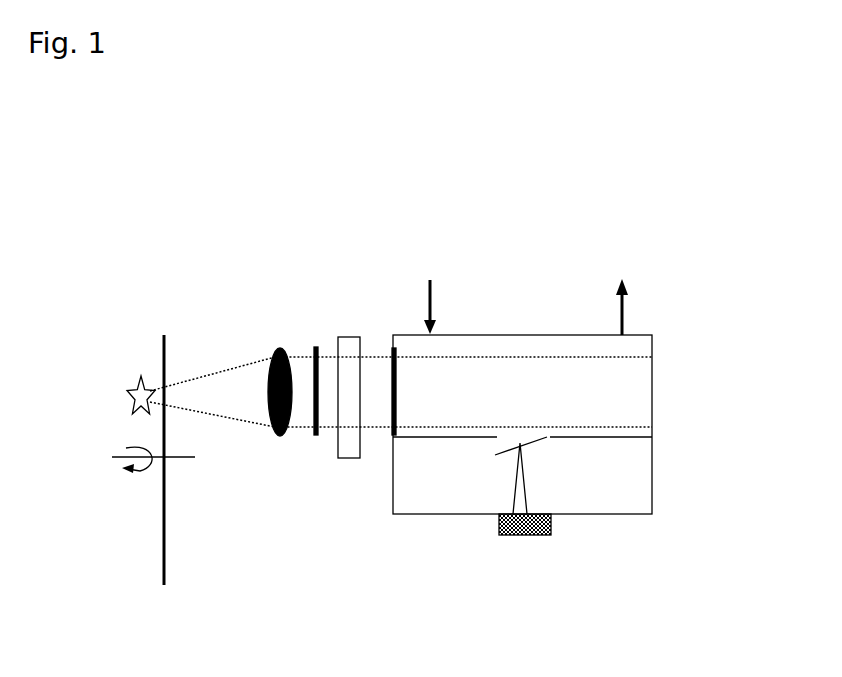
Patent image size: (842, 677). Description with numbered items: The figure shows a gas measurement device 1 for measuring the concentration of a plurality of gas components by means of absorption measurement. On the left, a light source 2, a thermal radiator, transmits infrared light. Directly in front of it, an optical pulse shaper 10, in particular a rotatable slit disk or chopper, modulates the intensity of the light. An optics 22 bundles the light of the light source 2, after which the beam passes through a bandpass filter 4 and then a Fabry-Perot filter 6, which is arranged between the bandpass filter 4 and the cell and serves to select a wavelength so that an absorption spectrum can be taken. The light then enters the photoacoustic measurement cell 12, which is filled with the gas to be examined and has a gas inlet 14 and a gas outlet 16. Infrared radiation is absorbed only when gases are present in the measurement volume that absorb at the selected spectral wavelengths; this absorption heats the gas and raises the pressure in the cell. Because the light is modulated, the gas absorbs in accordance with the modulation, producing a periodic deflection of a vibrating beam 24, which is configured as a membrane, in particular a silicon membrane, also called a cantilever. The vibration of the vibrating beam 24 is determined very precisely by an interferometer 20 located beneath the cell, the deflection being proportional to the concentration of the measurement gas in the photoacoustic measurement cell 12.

The gas measurement device 1 is at (492, 134).
The light source 2 is at (128, 392).
The bandpass filter 4 is at (315, 345).
The Fabry-Perot filter 6 is at (340, 335).
The optical pulse shaper 10 is at (163, 335).
The photoacoustic measurement cell 12 is at (652, 405).
The gas inlet 14 is at (433, 300).
The gas outlet 16 is at (627, 298).
The interferometer 20 is at (523, 535).
The optics 22 is at (275, 348).
The vibrating beam 24 is at (533, 442).